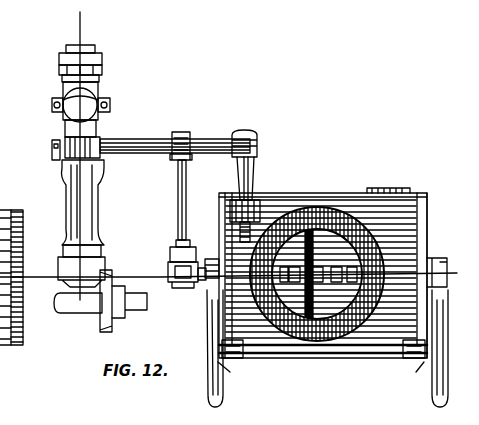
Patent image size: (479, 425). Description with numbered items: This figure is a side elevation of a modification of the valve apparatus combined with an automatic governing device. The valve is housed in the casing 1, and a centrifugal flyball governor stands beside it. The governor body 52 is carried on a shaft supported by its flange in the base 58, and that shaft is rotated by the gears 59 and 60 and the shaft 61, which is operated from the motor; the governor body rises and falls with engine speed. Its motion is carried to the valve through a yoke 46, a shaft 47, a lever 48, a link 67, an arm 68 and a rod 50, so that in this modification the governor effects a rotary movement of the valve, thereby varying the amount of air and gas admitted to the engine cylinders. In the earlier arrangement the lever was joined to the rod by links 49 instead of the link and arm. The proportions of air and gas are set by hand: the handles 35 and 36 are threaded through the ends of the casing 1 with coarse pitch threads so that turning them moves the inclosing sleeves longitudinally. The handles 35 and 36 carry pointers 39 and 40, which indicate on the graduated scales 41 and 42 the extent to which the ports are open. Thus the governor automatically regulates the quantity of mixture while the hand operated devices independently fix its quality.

The casing 1 is at (305, 192).
The handle 35 is at (442, 408).
The handle 36 is at (222, 402).
The pointer 39 is at (424, 360).
The pointer 40 is at (220, 362).
The graduated scale 41 is at (405, 358).
The graduated scale 42 is at (243, 358).
The yoke 46 is at (52, 152).
The shaft 47 is at (128, 140).
The lever 48 is at (183, 132).
The links 49 is at (245, 186).
The rod 50 is at (208, 259).
The governor body 52 is at (66, 128).
The base 58 is at (97, 202).
The gear 59 is at (103, 258).
The gear 60 is at (101, 325).
The shaft 61 is at (78, 310).
The link 67 is at (178, 182).
The arm 68 is at (186, 288).